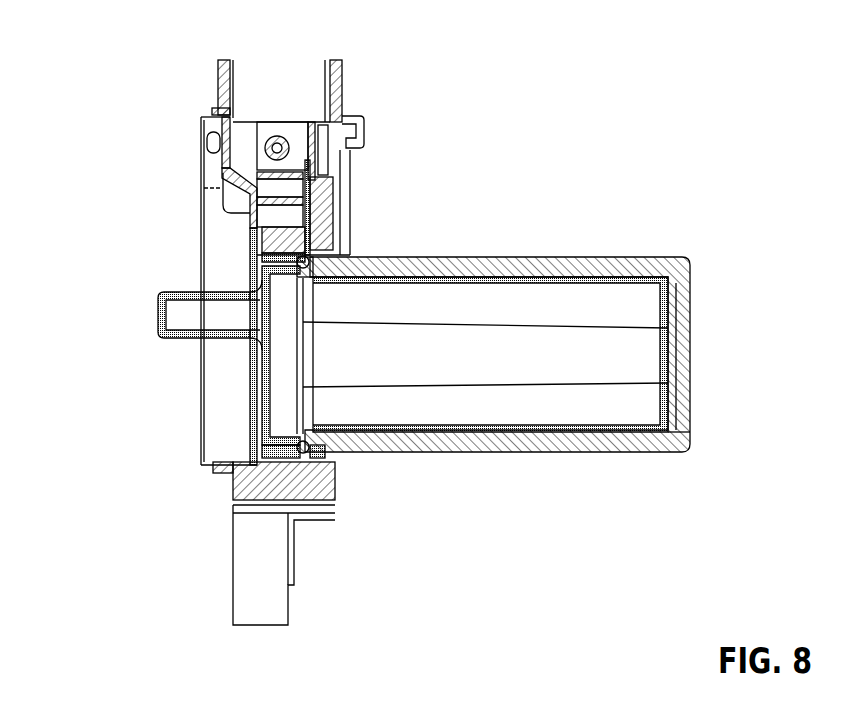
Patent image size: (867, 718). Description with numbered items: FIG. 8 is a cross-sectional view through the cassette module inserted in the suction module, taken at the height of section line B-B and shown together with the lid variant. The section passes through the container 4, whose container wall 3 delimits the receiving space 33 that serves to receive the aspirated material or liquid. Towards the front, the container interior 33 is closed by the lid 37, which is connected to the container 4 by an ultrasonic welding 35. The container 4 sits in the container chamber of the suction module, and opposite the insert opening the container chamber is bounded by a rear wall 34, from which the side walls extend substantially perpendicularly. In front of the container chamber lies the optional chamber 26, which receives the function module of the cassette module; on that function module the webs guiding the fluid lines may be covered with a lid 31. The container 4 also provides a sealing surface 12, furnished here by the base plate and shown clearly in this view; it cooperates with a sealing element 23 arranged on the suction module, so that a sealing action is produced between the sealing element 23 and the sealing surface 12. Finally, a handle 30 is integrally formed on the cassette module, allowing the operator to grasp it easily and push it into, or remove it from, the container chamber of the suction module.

The container wall 3 is at (313, 268).
The container 4 is at (396, 430).
The sealing surface 12 is at (297, 259).
The sealing element 23 is at (318, 457).
The optional chamber 26 is at (281, 242).
The handle 30 is at (183, 337).
The lid 31 is at (203, 257).
The receiving space 33 is at (580, 347).
The rear wall 34 is at (676, 384).
The ultrasonic welding 35 is at (298, 452).
The lid 37 is at (270, 382).